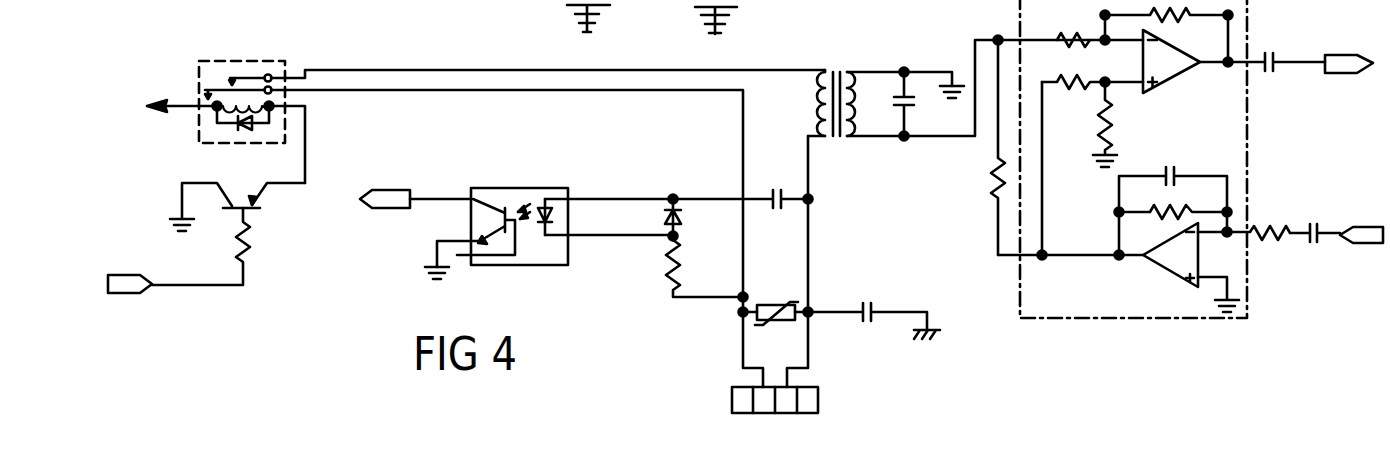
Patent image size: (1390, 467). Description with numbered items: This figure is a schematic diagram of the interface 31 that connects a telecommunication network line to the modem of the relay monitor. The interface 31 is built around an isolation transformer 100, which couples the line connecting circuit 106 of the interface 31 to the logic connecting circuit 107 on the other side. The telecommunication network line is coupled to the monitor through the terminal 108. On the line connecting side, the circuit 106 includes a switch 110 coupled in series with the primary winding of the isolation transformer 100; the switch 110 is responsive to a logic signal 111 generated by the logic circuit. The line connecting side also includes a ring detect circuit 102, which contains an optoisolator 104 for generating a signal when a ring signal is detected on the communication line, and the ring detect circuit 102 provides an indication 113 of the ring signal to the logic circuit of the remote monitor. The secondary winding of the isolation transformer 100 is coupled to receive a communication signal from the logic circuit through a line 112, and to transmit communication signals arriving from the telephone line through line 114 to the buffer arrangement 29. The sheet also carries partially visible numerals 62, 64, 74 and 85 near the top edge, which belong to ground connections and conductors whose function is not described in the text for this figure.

The buffer arrangement 29 is at (1108, 320).
The interface 31 is at (828, 325).
The ground connection 62 is at (553, 0).
The ground connection 64 is at (737, 6).
The conductor 74 is at (466, 0).
The conductor 85 is at (230, 7).
The isolation transformer 100 is at (838, 72).
The ring detect circuit 102 is at (540, 266).
The optoisolator 104 is at (512, 188).
The line connecting circuit 106 is at (812, 160).
The logic connecting circuit 107 is at (982, 172).
The terminal 108 is at (818, 390).
The switch 110 is at (240, 60).
The logic signal 111 is at (108, 275).
The line 112 is at (1365, 227).
The indication 113 is at (370, 212).
The line 114 is at (1355, 55).